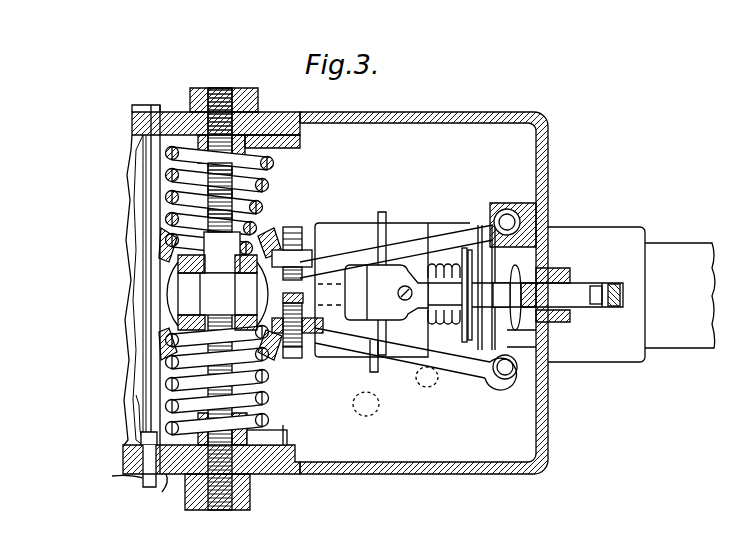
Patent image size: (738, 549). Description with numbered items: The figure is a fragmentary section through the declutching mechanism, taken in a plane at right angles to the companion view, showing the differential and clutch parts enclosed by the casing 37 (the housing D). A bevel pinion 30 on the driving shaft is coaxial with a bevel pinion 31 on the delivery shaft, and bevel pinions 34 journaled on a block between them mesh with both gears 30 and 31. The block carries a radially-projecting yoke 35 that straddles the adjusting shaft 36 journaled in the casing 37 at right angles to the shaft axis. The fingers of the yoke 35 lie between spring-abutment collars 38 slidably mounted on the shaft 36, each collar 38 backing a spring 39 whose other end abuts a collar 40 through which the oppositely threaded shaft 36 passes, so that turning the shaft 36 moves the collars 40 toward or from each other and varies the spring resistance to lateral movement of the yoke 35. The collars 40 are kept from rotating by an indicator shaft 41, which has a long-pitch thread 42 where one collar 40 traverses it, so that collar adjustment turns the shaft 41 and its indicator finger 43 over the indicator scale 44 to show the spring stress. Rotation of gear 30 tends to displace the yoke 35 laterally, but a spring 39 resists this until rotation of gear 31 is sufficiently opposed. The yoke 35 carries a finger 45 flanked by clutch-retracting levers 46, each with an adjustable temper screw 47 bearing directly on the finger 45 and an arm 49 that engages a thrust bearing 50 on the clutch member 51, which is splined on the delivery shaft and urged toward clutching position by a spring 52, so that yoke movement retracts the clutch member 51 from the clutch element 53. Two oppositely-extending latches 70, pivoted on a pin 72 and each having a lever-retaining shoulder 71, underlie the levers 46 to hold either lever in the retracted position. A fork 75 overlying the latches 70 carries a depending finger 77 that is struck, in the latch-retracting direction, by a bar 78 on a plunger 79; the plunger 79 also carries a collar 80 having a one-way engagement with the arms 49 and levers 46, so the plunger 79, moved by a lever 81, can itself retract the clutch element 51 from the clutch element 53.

The housing D is at (500, 128).
The bevel pinion 30 is at (132, 332).
The bevel pinion 31 is at (275, 236).
The bevel pinions 34 is at (196, 290).
The yoke 35 is at (188, 302).
The adjusting shaft 36 is at (165, 240).
The casing 37 is at (452, 112).
The spring-abutment collars 38 is at (178, 262).
The spring 39 is at (172, 200).
The collar 40 is at (292, 148).
The indicator shaft 41 is at (152, 172).
The long-pitch thread 42 is at (136, 407).
The indicator finger 43 is at (128, 478).
The indicator scale 44 is at (162, 493).
The finger 45 is at (326, 255).
The clutch-retracting lever 46 is at (378, 230).
The adjustable temper screw 47 is at (300, 240).
The arm 49 is at (500, 216).
The thrust bearing 50 is at (482, 352).
The clutch member 51 is at (464, 344).
The spring 52 is at (442, 322).
The clutch element 53 is at (546, 322).
The latch 70 is at (378, 362).
The lever-retaining shoulder 71 is at (386, 232).
The pin 72 is at (370, 322).
The fork 75 is at (408, 283).
The depending finger 77 is at (548, 258).
The bar 78 is at (420, 350).
The plunger 79 is at (547, 295).
The collar 80 is at (536, 282).
The lever 81 is at (623, 302).